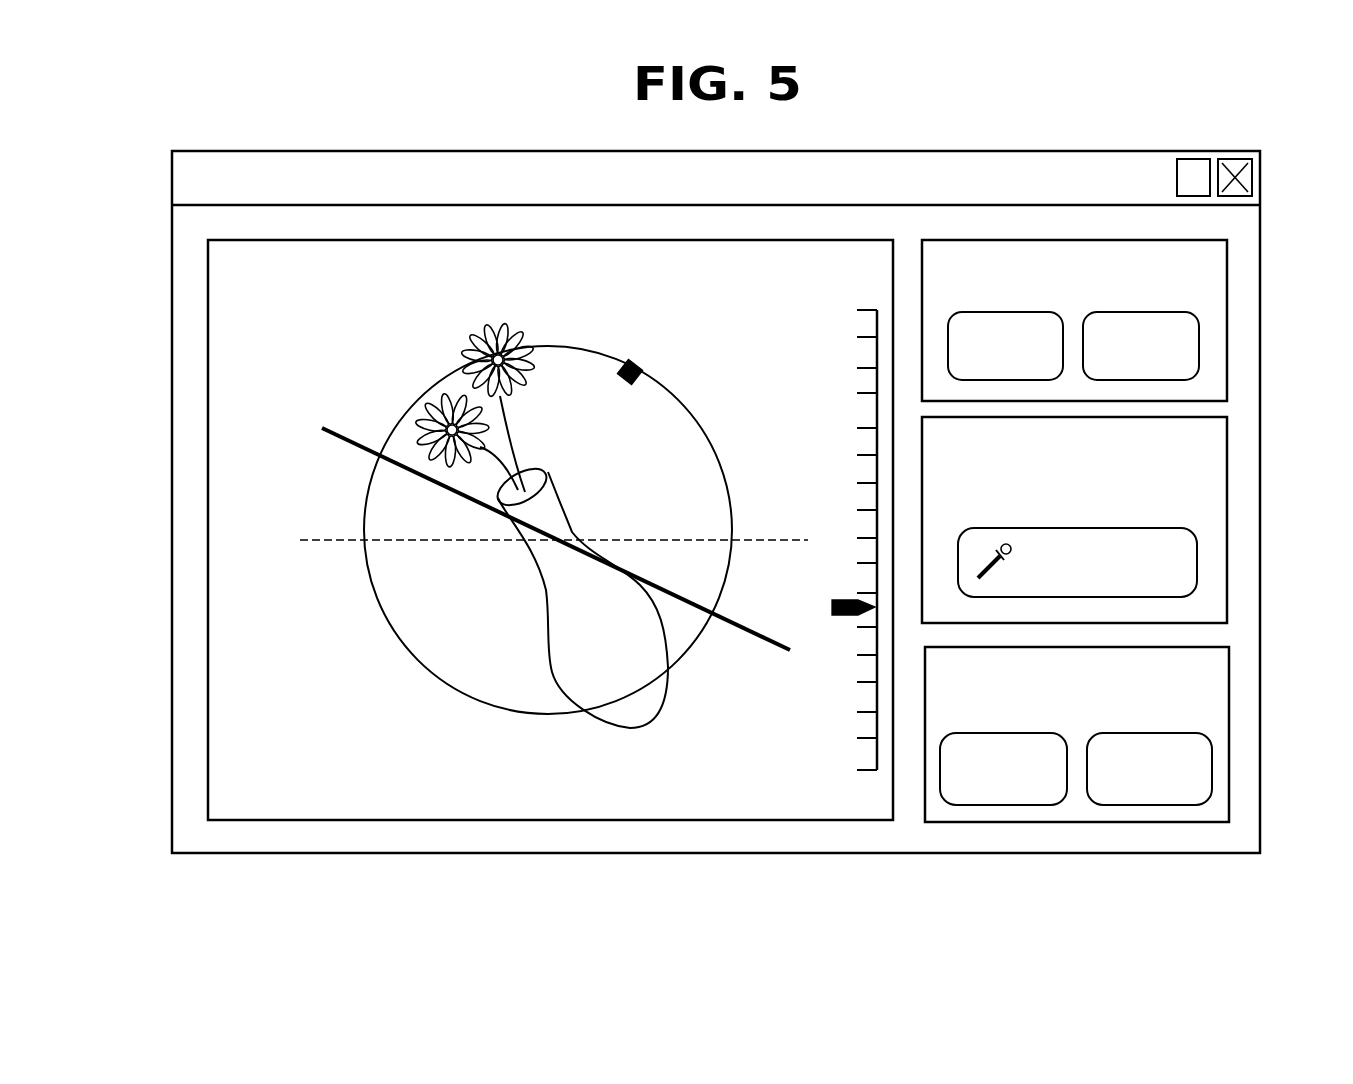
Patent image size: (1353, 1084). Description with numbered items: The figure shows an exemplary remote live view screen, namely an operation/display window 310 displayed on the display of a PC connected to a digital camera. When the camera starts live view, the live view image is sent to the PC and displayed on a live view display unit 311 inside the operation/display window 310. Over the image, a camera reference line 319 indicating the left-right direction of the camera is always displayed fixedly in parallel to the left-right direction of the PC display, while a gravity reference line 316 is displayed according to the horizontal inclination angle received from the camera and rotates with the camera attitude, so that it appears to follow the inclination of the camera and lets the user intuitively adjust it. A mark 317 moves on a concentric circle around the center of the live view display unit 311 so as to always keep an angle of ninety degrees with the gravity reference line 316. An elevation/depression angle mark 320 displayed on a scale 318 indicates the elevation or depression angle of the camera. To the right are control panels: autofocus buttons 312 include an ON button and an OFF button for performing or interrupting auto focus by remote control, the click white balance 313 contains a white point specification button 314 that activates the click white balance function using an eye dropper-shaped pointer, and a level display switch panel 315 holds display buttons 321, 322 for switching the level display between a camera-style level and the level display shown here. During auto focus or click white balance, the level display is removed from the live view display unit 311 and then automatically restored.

The operation/display window 310 is at (172, 543).
The live view display unit 311 is at (208, 708).
The autofocus buttons 312 is at (1227, 322).
The click white balance 313 is at (1227, 492).
The white point specification button 314 is at (1197, 560).
The level display switch panel 315 is at (1229, 723).
The gravity reference line 316 is at (330, 426).
The mark 317 is at (632, 362).
The scale 318 is at (857, 318).
The camera reference line 319 is at (757, 538).
The elevation/depression angle mark 320 is at (843, 618).
The display button 321 is at (1008, 806).
The display button 322 is at (1155, 806).